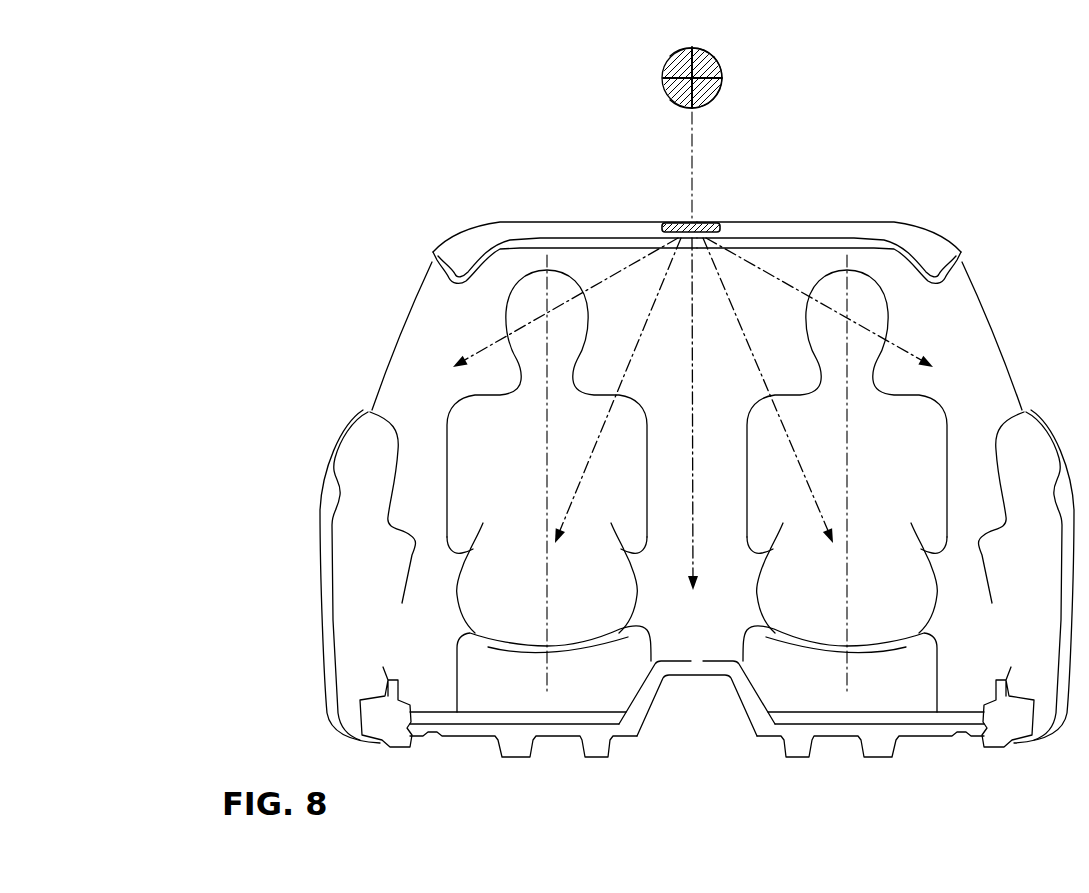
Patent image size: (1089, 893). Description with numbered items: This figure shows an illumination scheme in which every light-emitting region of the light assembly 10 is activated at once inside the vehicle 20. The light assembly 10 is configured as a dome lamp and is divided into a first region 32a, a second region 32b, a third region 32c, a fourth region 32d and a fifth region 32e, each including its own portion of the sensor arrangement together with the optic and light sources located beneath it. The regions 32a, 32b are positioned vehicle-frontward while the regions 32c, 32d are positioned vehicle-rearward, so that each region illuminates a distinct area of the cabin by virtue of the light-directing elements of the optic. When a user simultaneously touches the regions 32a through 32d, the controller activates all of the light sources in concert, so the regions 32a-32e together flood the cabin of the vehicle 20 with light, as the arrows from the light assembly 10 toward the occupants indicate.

The light assembly 10 is at (660, 65).
The vehicle 20 is at (944, 248).
The first region 32a is at (713, 100).
The second region 32b is at (670, 98).
The third region 32c is at (670, 56).
The fourth region 32d is at (714, 57).
The fifth region 32e is at (718, 71).